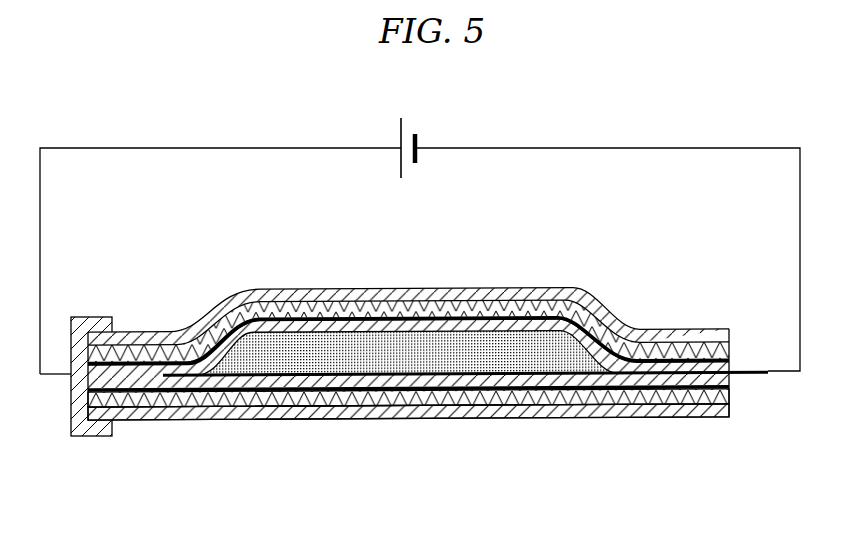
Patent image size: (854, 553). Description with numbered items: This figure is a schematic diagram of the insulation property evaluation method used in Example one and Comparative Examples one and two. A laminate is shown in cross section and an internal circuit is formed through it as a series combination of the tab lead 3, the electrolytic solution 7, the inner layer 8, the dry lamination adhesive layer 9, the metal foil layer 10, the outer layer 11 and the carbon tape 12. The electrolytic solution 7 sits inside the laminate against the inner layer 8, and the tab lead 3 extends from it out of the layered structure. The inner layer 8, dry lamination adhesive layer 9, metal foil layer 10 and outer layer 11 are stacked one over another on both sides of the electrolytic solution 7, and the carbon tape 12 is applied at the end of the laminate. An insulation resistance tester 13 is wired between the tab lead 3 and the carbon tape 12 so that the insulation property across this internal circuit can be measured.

The tab lead 3 is at (747, 368).
The electrolytic solution 7 is at (263, 357).
The inner layer 8 is at (305, 327).
The dry lamination adhesive layer 9 is at (342, 317).
The metal foil layer 10 is at (500, 307).
The outer layer 11 is at (455, 290).
The carbon tape 12 is at (87, 317).
The insulation resistance tester 13 is at (408, 127).